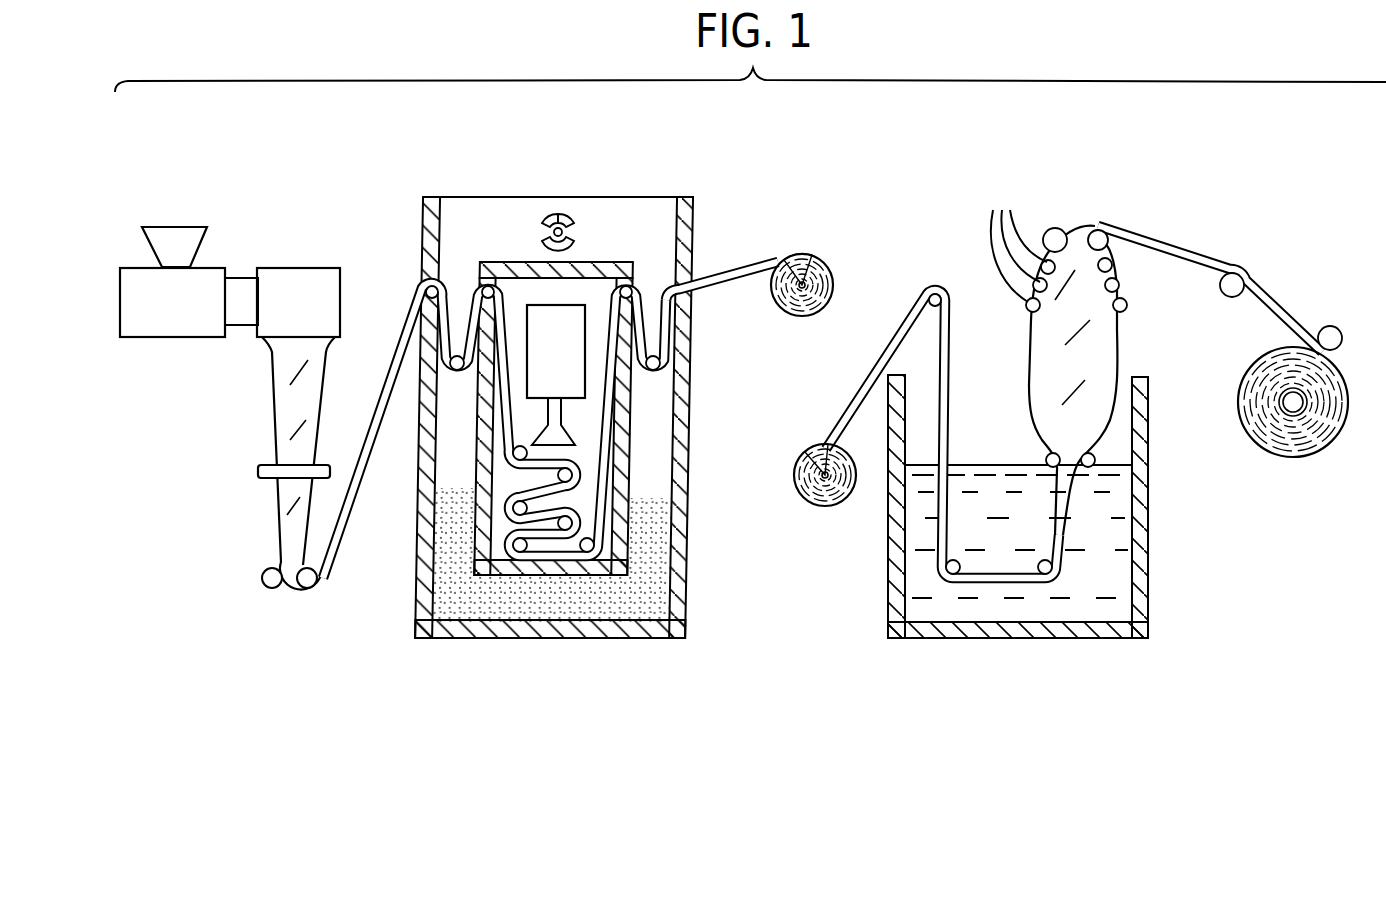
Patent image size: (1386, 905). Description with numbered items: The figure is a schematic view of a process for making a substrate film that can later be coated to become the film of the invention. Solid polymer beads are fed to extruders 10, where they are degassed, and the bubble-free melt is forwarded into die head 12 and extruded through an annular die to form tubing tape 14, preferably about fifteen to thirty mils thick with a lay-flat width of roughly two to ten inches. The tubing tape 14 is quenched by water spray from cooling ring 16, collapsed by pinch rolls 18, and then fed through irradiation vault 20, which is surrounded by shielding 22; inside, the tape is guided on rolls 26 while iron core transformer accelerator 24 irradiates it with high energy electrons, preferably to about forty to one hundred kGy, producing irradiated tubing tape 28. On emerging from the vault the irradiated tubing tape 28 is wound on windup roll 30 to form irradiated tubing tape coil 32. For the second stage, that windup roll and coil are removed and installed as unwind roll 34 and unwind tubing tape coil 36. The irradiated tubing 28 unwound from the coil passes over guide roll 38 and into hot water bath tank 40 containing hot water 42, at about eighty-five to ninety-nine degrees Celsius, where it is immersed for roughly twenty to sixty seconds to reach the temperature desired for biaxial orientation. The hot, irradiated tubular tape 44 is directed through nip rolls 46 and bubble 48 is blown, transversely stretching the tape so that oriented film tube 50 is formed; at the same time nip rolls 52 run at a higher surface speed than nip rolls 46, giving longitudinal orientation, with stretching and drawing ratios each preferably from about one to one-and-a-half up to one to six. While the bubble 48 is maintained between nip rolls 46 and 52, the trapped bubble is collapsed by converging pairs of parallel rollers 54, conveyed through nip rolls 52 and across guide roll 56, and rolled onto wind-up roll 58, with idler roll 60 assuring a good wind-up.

The extruder 10 is at (160, 312).
The die head 12 is at (292, 277).
The tubing tape 14 is at (280, 398).
The cooling ring 16 is at (258, 472).
The pinch rolls 18 is at (262, 578).
The irradiation vault 20 is at (627, 520).
The shielding 22 is at (546, 638).
The iron core transformer accelerator 24 is at (543, 362).
The rolls 26 is at (513, 455).
The irradiated tubing tape 28 is at (727, 272).
The windup roll 30 is at (806, 282).
The irradiated tubing tape coil 32 is at (782, 312).
The unwind roll 34 is at (816, 484).
The unwind tubing tape coil 36 is at (830, 508).
The guide roll 38 is at (937, 292).
The hot water bath tank 40 is at (1150, 598).
The hot water 42 is at (1112, 503).
The hot, irradiated tubular tape 44 is at (1065, 525).
The nip rolls 46 is at (1045, 455).
The bubble 48 is at (1102, 333).
The oriented film tube 50 is at (1178, 240).
The nip rolls 52 is at (1098, 232).
The converging pairs of parallel rollers 54 is at (1017, 240).
The guide roll 56 is at (1228, 295).
The wind-up roll 58 is at (1296, 405).
The idler roll 60 is at (1333, 328).